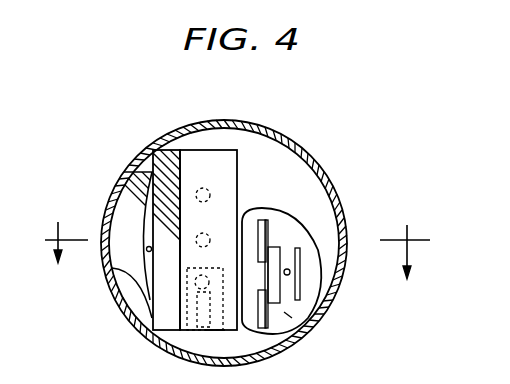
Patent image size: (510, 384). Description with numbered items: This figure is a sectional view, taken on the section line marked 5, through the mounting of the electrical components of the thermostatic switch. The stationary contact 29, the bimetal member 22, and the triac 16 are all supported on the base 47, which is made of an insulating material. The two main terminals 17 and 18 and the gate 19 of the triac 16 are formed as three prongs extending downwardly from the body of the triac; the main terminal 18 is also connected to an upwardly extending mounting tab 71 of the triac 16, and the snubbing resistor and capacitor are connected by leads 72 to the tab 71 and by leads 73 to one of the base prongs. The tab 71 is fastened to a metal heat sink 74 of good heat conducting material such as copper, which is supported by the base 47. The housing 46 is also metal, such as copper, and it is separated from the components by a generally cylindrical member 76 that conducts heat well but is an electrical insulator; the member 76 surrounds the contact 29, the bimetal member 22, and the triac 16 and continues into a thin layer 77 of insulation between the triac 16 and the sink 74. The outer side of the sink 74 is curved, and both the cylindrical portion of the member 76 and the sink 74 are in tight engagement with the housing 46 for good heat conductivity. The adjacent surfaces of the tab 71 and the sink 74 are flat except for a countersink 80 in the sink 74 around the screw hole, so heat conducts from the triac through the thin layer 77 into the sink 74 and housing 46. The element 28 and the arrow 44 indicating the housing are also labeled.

The section line 5- 5 is at (224, 250).
The triac 16 is at (205, 148).
The main terminal 17 is at (206, 276).
The main terminal 18 is at (208, 235).
The gate 19 is at (207, 189).
The bimetal member 22 is at (274, 212).
The motor armature 28 is at (279, 238).
The stationary contact 29 is at (290, 274).
The housing 44 is at (327, 162).
The housing 46 is at (331, 198).
The base 47 is at (288, 315).
The mounting tab 71 is at (167, 150).
The leads 72 is at (181, 237).
The leads 73 is at (215, 331).
The heat sink 74 is at (118, 216).
The cylindrical member 76 is at (266, 145).
The thin layer of insulation 77 is at (146, 272).
The countersink 80 is at (147, 251).